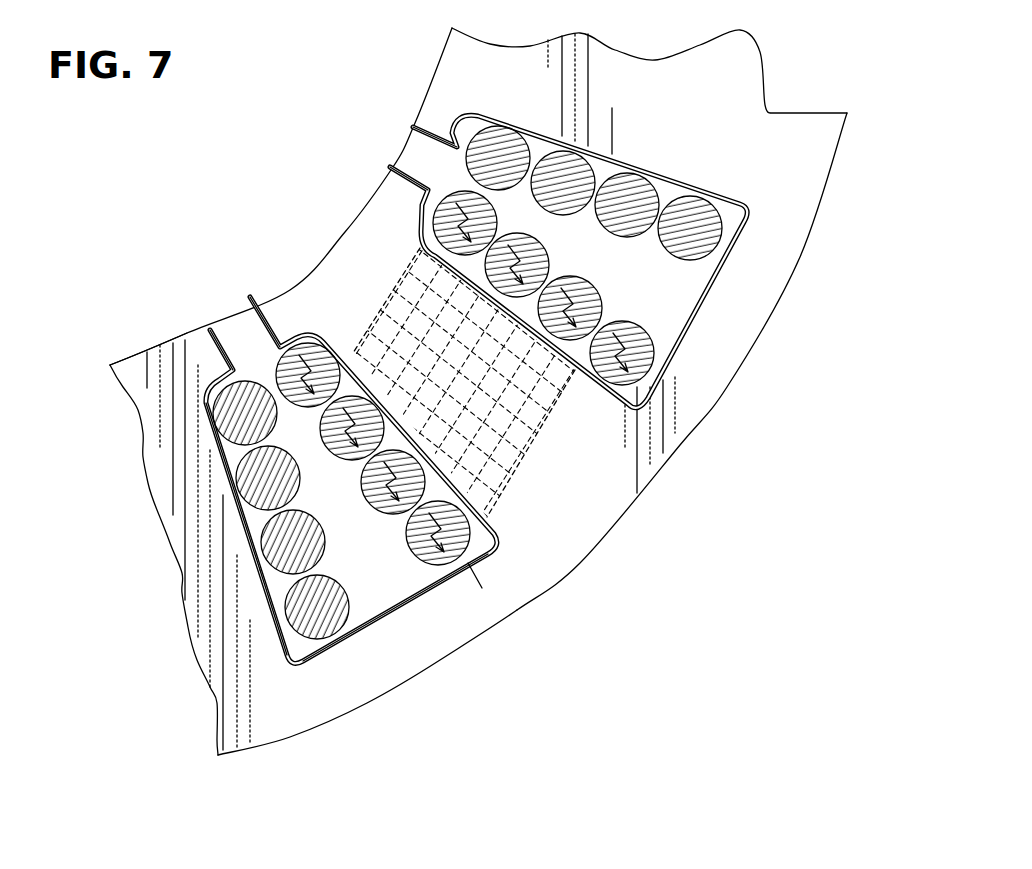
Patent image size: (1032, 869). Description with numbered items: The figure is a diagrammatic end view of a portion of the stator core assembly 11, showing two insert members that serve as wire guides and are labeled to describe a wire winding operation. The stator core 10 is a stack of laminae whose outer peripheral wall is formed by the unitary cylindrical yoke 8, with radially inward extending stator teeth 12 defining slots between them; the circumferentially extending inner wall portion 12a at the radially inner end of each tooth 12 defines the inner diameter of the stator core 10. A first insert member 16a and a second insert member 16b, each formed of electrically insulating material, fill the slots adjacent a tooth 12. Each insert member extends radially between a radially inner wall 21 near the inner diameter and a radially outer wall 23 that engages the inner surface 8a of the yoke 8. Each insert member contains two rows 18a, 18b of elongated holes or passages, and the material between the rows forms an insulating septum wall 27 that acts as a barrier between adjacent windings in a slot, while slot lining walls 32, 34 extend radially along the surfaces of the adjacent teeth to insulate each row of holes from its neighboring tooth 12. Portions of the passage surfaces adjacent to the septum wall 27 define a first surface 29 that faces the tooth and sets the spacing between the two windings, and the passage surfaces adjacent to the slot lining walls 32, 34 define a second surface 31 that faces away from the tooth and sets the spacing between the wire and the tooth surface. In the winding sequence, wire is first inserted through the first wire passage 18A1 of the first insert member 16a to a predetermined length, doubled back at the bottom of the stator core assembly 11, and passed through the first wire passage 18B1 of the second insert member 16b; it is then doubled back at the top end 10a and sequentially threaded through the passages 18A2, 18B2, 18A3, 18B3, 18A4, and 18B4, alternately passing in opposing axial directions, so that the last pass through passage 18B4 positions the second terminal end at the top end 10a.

The yoke 8 is at (810, 135).
The inner surface 8a is at (703, 290).
The stator core 10 is at (240, 683).
The top end 10a is at (200, 523).
The stator core assembly 11 is at (287, 748).
The stator tooth 12 is at (563, 500).
The inner wall portion 12a is at (433, 73).
The first insert member 16a is at (364, 597).
The second insert member 16b is at (702, 278).
The first row of passages 18a is at (250, 288).
The second row of passages 18b is at (380, 147).
The first wire passage of first insert member 18A1 is at (282, 370).
The second wire passage of first insert member 18A2 is at (340, 455).
The third wire passage of first insert member 18A3 is at (393, 512).
The fourth wire passage of first insert member 18A4 is at (490, 540).
The first wire passage of second insert member 18B1 is at (447, 178).
The second wire passage of second insert member 18B2 is at (545, 240).
The third wire passage of second insert member 18B3 is at (605, 305).
The fourth wire passage of second insert member 18B4 is at (655, 362).
The radially inner wall 21 is at (187, 340).
The radially outer wall 23 is at (403, 592).
The septum wall 27 is at (523, 210).
The first surface 29 is at (277, 535).
The second surface 31 is at (270, 557).
The slot lining wall 32 is at (330, 352).
The slot lining wall 34 is at (222, 472).